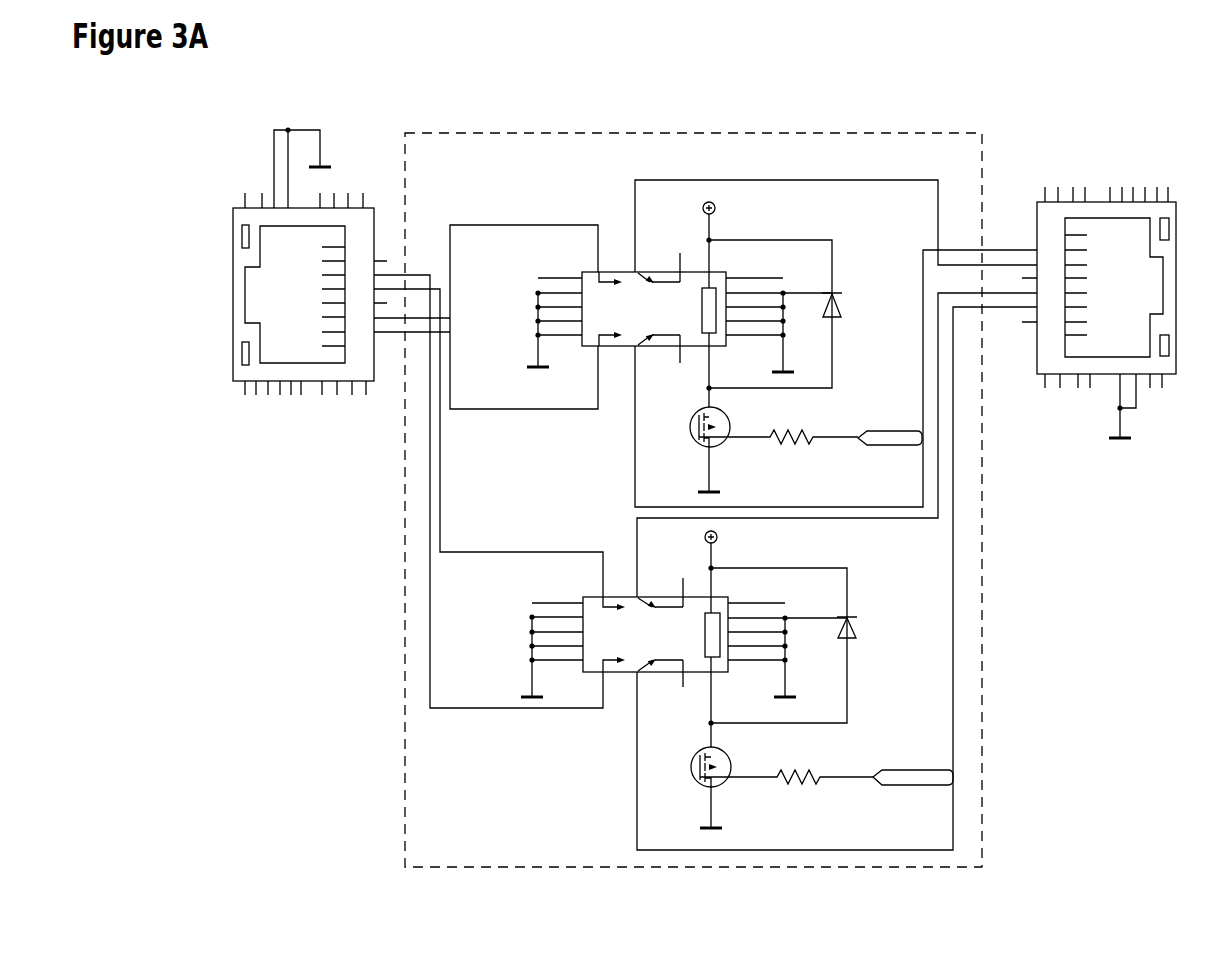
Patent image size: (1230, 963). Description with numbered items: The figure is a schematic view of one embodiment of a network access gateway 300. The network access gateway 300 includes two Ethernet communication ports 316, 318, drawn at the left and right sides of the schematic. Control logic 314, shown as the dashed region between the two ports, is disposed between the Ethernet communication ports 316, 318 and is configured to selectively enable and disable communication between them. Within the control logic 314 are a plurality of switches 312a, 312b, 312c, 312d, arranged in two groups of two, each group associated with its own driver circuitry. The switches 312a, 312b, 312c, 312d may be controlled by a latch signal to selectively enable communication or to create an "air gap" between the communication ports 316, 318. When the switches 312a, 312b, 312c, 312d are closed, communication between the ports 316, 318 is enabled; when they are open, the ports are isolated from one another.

The network access gateway 300 is at (145, 167).
The switch 312a is at (622, 262).
The switch 312b is at (625, 352).
The switch 312c is at (627, 585).
The switch 312d is at (623, 678).
The control logic 314 is at (715, 132).
The Ethernet communication port 316 is at (232, 293).
The Ethernet communication port 318 is at (1176, 258).